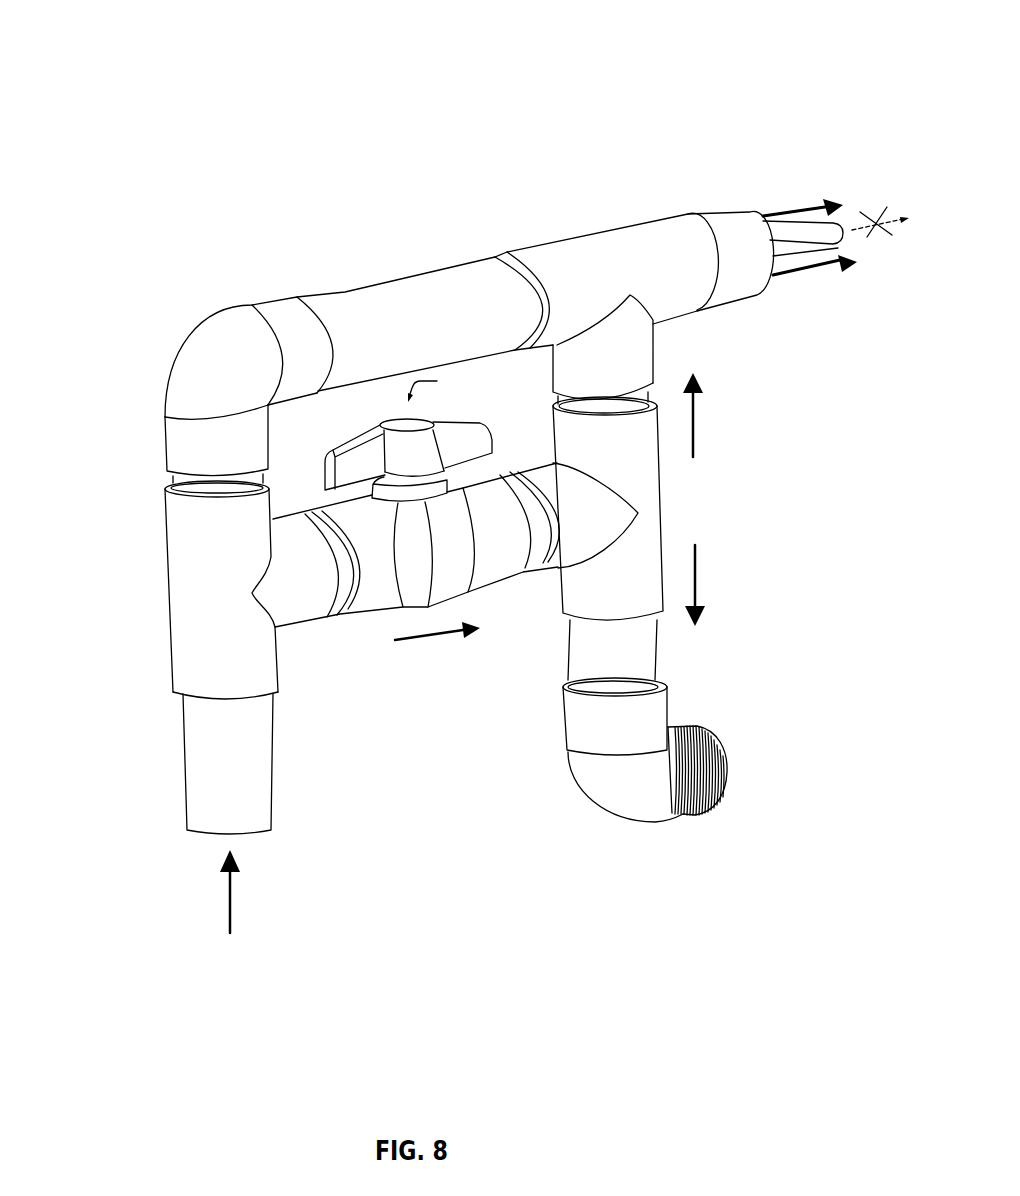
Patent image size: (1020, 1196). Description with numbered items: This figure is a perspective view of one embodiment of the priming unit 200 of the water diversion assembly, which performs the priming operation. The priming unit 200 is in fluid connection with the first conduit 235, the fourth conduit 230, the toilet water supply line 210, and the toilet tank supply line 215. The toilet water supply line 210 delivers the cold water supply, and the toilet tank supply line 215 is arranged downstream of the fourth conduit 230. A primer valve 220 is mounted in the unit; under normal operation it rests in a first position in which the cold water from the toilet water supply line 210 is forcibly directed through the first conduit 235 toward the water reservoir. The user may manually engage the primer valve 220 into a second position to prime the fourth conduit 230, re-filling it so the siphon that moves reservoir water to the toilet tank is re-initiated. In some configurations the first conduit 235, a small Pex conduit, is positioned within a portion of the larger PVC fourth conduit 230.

The priming unit 200 is at (170, 85).
The toilet water supply line 210 is at (213, 855).
The toilet tank supply line 215 is at (746, 801).
The primer valve 220 is at (431, 594).
The fourth conduit 230 is at (697, 196).
The first conduit 235 is at (805, 233).